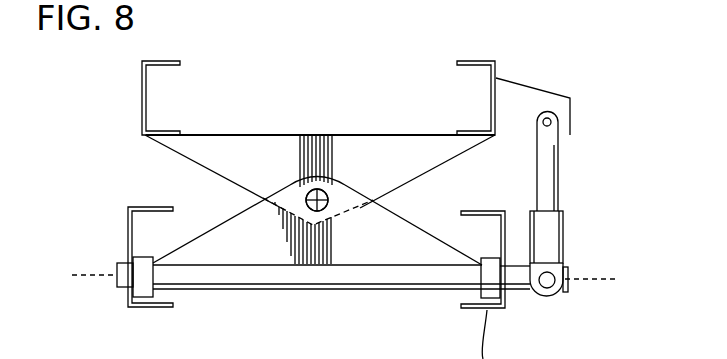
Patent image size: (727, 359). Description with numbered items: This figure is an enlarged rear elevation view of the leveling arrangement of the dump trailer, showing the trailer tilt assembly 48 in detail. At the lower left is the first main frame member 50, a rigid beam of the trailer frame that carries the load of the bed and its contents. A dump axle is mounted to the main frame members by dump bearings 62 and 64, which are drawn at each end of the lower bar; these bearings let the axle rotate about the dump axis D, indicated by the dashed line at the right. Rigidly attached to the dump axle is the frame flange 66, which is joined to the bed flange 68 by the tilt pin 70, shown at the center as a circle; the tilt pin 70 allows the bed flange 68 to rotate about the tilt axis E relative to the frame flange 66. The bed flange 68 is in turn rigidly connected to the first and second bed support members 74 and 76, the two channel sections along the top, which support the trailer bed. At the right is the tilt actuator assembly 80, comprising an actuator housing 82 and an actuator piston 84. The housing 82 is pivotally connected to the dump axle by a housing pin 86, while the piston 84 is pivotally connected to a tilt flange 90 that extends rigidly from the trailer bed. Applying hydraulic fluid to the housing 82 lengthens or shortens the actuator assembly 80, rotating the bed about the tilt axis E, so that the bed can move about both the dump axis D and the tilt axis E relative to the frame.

The trailer tilt assembly 48 is at (266, 212).
The first main frame member 50 is at (128, 238).
The dump bearing 62 is at (148, 275).
The dump bearing 64 is at (479, 282).
The frame flange 66 is at (222, 235).
The bed flange 68 is at (205, 162).
The tilt pin 70 is at (306, 194).
The first bed support member 74 is at (142, 103).
The second bed support member 76 is at (481, 62).
The tilt actuator assembly 80 is at (601, 235).
The actuator housing 82 is at (557, 238).
The actuator piston 84 is at (551, 162).
The housing pin 86 is at (548, 284).
The tilt flange 90 is at (509, 95).
The tilt axis E is at (328, 194).
The dump axis D is at (605, 280).